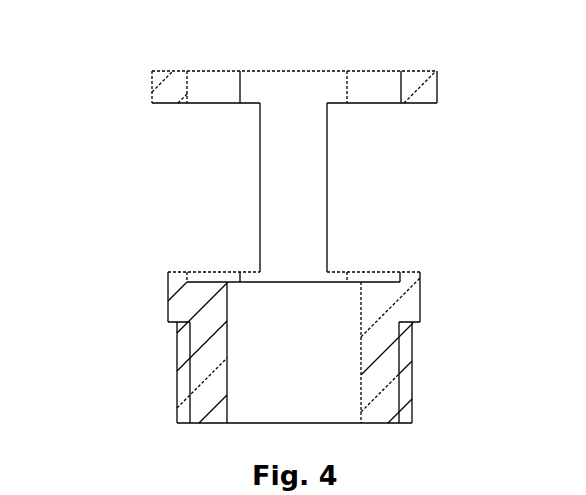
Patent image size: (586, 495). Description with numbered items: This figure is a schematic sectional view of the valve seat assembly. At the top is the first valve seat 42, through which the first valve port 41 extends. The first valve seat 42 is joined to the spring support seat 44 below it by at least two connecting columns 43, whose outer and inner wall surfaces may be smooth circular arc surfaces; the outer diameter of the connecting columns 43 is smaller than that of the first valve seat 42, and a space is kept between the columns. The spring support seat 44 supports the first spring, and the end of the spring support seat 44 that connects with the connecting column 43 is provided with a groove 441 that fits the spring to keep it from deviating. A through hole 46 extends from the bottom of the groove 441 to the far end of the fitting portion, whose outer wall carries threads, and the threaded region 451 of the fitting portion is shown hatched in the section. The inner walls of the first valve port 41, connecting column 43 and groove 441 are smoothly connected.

The first valve port 41 is at (217, 87).
The first valve seat 42 is at (171, 89).
The connecting column 43 is at (280, 202).
The spring support seat 44 is at (175, 290).
The groove 441 is at (361, 298).
The through hole 46 is at (310, 342).
The lower leg wall 451 is at (182, 357).